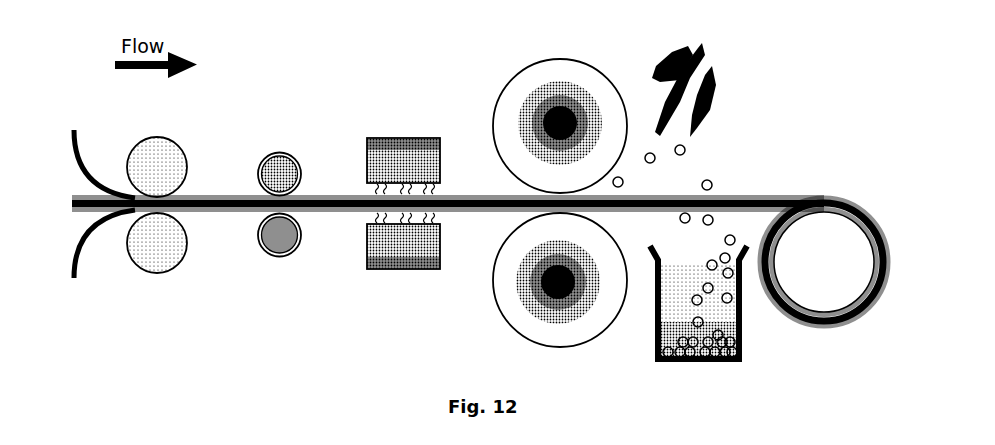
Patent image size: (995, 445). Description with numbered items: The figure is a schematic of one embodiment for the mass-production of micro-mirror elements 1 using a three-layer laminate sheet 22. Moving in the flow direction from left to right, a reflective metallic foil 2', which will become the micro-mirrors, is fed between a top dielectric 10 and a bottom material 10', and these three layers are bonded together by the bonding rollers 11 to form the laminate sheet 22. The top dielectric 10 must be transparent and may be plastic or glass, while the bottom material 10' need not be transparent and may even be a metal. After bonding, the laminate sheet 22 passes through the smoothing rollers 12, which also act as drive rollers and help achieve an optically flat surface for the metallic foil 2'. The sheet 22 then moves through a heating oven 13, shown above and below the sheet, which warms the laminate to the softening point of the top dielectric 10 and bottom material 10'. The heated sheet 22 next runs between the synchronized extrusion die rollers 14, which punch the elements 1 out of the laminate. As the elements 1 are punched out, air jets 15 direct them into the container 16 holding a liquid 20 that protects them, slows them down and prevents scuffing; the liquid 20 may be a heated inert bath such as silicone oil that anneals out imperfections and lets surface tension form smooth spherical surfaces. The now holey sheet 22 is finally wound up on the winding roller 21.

The micro-mirror elements 1 is at (675, 186).
The metallic foil 2' is at (91, 183).
The top dielectric 10 is at (104, 151).
The bottom material 10' is at (104, 258).
The bonding rollers 11 is at (170, 141).
The smoothing rollers 12 is at (279, 153).
The heating oven 13 is at (395, 148).
The synchronized extrusion die rollers 14 is at (508, 88).
The air jets 15 is at (701, 58).
The container 16 is at (742, 352).
The liquid 20 is at (678, 296).
The winding roller 21 is at (828, 193).
The 3-layer laminate sheet 22 is at (343, 190).